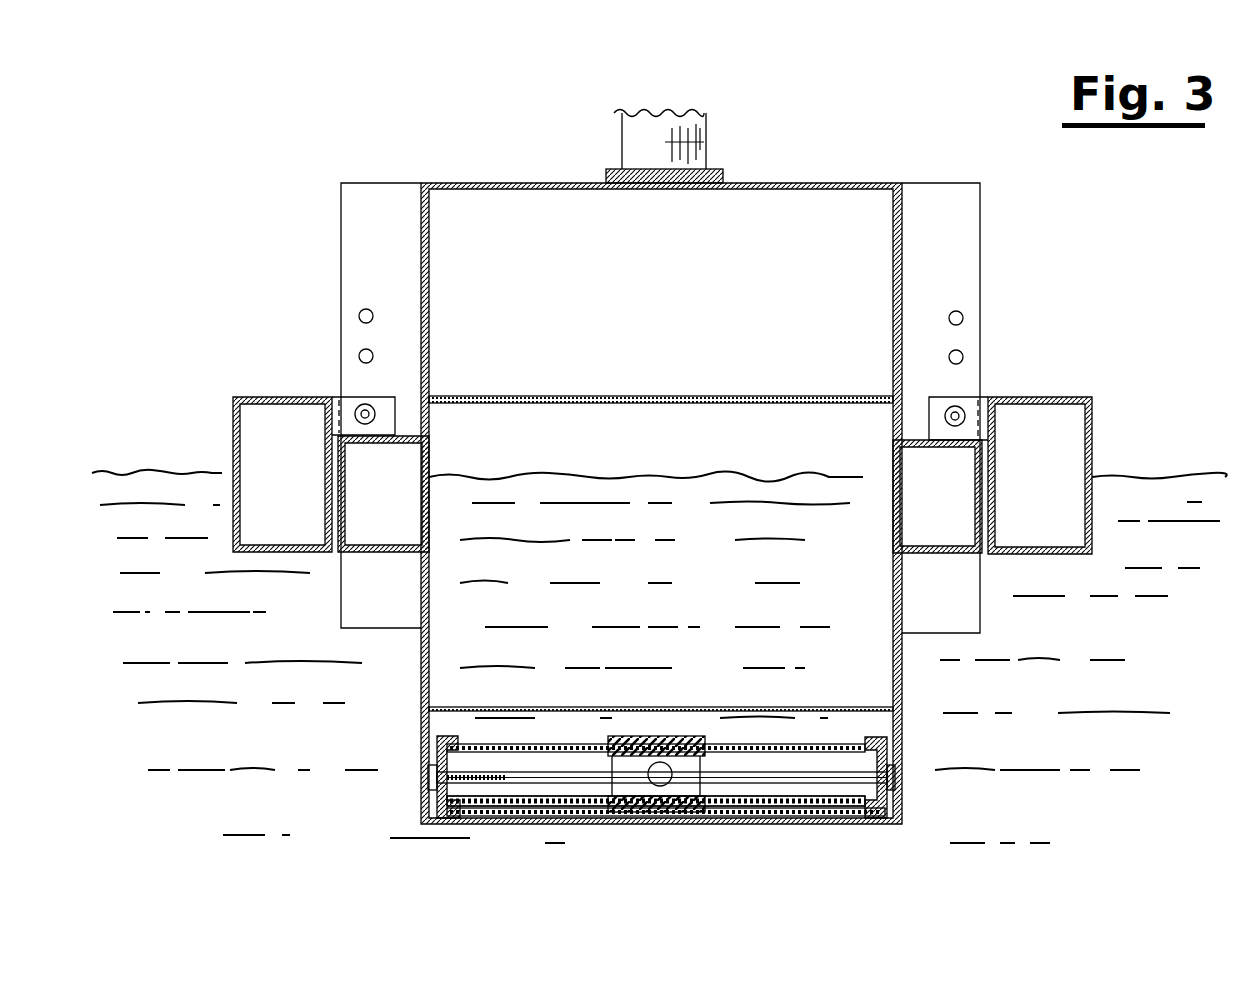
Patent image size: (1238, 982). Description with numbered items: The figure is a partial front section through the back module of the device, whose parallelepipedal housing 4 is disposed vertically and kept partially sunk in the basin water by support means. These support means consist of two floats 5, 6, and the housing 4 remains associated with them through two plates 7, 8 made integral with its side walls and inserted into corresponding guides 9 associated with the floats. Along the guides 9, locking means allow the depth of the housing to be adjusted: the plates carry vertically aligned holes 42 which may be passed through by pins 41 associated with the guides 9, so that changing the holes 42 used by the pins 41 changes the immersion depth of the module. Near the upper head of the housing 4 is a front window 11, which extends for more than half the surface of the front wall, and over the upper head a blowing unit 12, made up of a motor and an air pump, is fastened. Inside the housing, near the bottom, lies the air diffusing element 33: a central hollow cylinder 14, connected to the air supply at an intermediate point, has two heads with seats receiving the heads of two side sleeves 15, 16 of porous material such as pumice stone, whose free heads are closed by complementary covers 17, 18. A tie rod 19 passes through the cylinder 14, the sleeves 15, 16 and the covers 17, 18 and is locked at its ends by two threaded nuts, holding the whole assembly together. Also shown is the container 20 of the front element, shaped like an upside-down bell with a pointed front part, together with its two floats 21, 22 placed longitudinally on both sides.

The housing 4 is at (538, 182).
The float 5 is at (233, 437).
The float 6 is at (1092, 428).
The plate 7 is at (362, 213).
The plate 8 is at (957, 255).
The guide 9 is at (958, 404).
The front window 11 is at (485, 268).
The blowing unit 12 is at (707, 142).
The hollow cylinder 14 is at (652, 823).
The side sleeve 15 is at (517, 823).
The side sleeve 16 is at (823, 825).
The cover 17 is at (420, 790).
The cover 18 is at (893, 805).
The tie rod 19 is at (752, 775).
The container 20 is at (790, 395).
The float 21 is at (942, 557).
The float 22 is at (358, 555).
The air diffusing element 33 is at (838, 735).
The pin 41 is at (365, 408).
The hole 42 is at (962, 316).